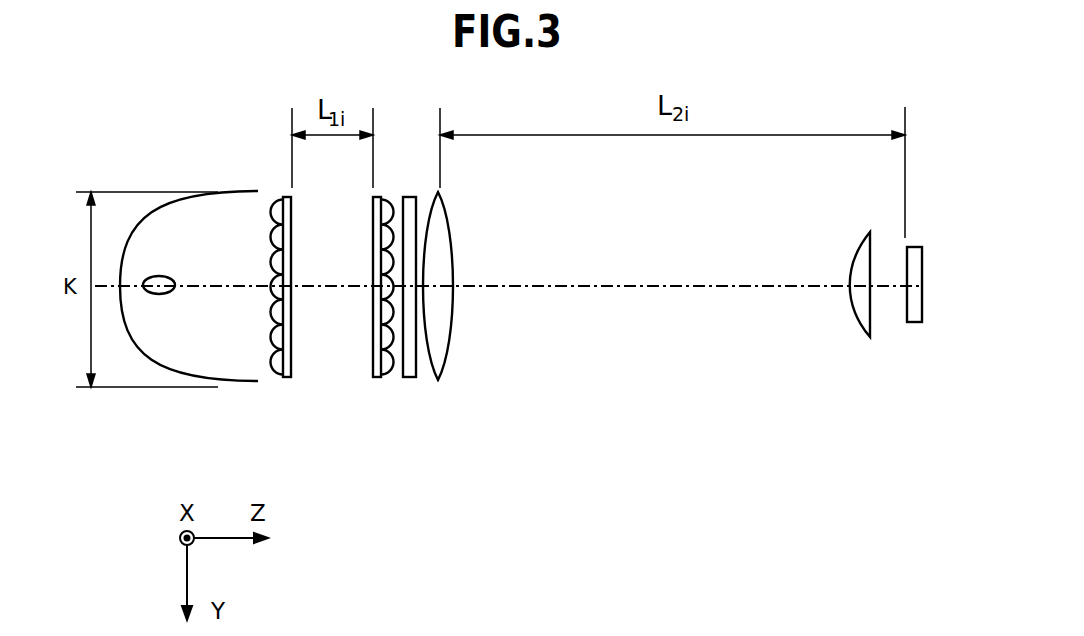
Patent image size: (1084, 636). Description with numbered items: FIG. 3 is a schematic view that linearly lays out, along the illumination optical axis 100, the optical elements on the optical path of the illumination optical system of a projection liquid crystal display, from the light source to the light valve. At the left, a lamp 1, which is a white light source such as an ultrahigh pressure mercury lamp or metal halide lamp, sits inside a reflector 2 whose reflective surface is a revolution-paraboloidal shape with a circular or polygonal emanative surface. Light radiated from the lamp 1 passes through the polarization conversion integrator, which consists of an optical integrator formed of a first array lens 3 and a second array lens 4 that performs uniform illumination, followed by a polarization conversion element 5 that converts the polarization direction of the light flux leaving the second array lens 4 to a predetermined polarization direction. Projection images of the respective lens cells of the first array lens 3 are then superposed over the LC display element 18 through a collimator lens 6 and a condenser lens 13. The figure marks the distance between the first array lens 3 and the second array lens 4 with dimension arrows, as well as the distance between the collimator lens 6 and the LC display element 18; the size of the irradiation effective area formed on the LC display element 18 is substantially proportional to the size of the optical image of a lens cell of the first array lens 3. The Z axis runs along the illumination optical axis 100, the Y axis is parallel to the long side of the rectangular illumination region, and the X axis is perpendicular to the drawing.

The lamp 1 is at (156, 295).
The reflector 2 is at (233, 381).
The first array lens 3 is at (287, 377).
The second array lens 4 is at (377, 377).
The polarization conversion element 5 is at (410, 377).
The collimator lens 6 is at (447, 368).
The condenser lens 13 is at (853, 307).
The LC display element 18 is at (903, 308).
The illumination optical axis 100 is at (332, 288).